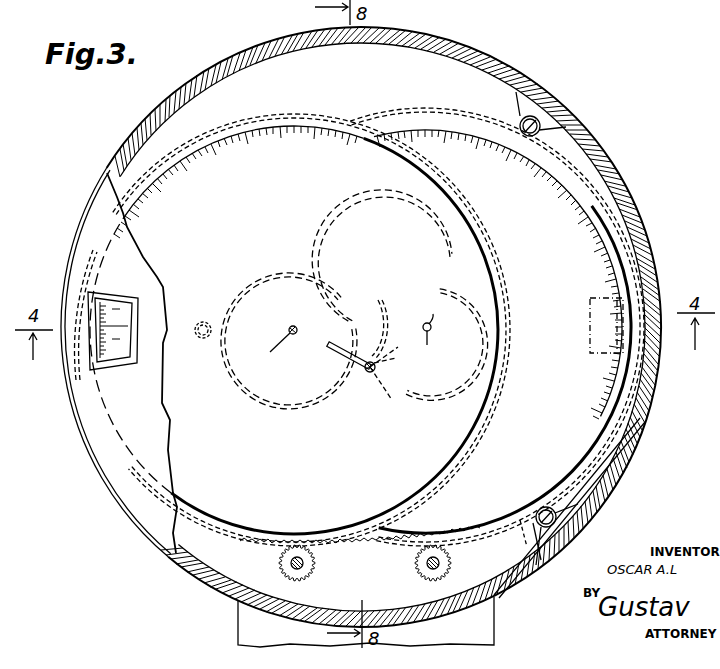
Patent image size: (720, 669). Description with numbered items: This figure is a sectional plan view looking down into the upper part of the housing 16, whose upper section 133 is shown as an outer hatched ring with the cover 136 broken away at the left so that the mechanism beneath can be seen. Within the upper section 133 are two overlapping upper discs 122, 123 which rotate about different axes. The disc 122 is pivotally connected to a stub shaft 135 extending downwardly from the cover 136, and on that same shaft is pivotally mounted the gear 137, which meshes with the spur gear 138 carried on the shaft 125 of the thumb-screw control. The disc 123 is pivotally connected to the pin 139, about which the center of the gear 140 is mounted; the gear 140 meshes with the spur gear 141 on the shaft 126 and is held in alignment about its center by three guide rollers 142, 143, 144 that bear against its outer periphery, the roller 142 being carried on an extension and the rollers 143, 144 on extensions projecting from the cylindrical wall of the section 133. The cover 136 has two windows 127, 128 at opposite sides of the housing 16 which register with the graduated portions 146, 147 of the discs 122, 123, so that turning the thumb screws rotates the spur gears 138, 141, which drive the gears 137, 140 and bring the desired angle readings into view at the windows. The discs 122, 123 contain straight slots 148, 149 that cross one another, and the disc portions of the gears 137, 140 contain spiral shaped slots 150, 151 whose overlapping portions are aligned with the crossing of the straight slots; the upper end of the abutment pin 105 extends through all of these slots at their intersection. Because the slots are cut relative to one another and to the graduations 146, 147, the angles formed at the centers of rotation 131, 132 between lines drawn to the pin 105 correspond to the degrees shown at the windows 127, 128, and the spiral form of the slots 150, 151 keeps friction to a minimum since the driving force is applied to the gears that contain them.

The housing 16 is at (617, 148).
The abutment 105 is at (373, 362).
The upper disc 122 is at (468, 419).
The upper disc 123 is at (598, 423).
The shaft 125 is at (290, 564).
The shaft 126 is at (428, 569).
The window 127 is at (90, 305).
The window 128 is at (640, 288).
The center of rotation 131 is at (288, 334).
The center of rotation 132 is at (427, 334).
The upper section 133 is at (194, 576).
The stub shaft 135 is at (291, 327).
The cover 136 is at (118, 425).
The gear 137 is at (252, 540).
The spur gear 138 is at (318, 562).
The pin 139 is at (436, 322).
The gear 140 is at (527, 538).
The spur gear 141 is at (452, 559).
The guide roller 142 is at (198, 320).
The guide roller 143 is at (548, 124).
The guide roller 144 is at (560, 520).
The graduated portion 146 is at (210, 157).
The graduated portion 147 is at (588, 212).
The straight slot 148 is at (336, 354).
The straight slot 149 is at (389, 382).
The spiral shaped slot 150 is at (311, 412).
The spiral shaped slot 151 is at (375, 262).